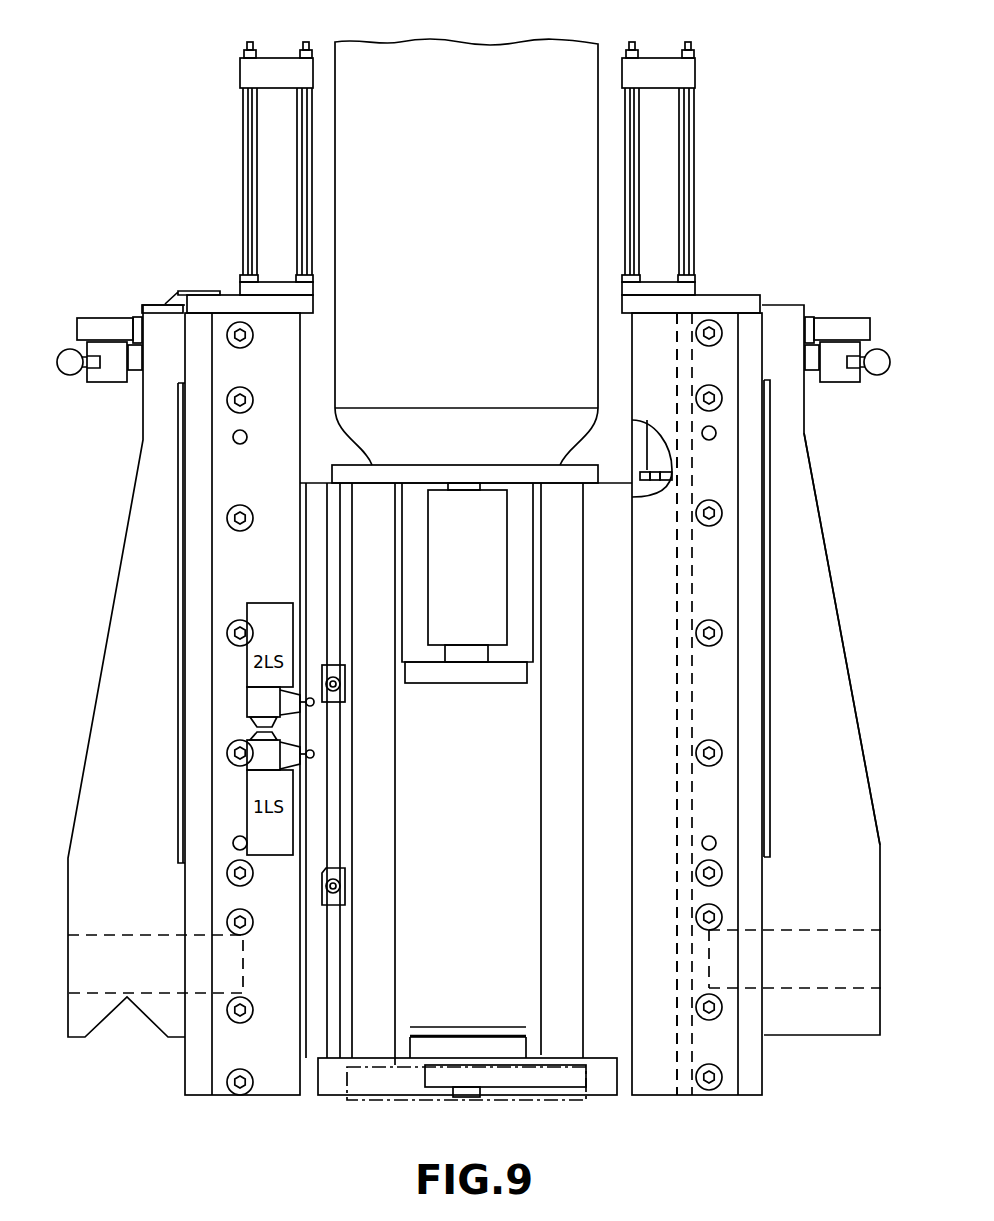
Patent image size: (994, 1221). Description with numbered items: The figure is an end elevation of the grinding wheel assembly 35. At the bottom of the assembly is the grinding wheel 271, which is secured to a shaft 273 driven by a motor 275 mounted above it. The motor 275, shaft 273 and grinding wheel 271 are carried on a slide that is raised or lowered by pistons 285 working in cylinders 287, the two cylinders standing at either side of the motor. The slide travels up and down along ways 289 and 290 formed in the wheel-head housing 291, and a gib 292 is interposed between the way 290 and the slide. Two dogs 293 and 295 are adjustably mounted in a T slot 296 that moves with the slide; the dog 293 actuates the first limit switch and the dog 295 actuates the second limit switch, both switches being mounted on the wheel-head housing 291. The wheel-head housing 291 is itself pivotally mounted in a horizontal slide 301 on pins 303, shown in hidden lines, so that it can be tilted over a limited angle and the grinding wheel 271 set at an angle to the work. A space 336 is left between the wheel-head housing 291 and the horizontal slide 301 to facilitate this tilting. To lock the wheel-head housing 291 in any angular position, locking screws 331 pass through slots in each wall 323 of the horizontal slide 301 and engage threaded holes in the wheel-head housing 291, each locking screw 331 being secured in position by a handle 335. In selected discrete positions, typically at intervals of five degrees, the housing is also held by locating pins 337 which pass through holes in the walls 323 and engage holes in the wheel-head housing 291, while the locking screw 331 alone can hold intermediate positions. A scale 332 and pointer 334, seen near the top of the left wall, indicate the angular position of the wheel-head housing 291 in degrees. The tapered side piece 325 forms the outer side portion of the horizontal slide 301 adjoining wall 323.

The grinding wheel assembly 35 is at (471, 31).
The motor 275 is at (518, 42).
The cylinders 287 is at (268, 108).
The wheel-head housing 291 is at (720, 287).
The horizontal slide 301 is at (86, 709).
The way 289 is at (190, 523).
The space 336 is at (178, 672).
The right side bracket 325 is at (850, 548).
The wall 323 is at (838, 650).
The way 290 is at (792, 682).
The pins 303 is at (870, 948).
The shaft 273 is at (462, 497).
The pistons 285 is at (650, 452).
The gib 292 is at (692, 583).
The T slot 296 is at (340, 598).
The dog 295 is at (345, 670).
The dog 293 is at (345, 868).
The grinding wheel 271 is at (357, 1100).
The locating pins 337 is at (120, 310).
The locking screws 331 is at (92, 384).
The handle 335 is at (72, 366).
The scale 332 is at (155, 304).
The pointer 334 is at (178, 294).